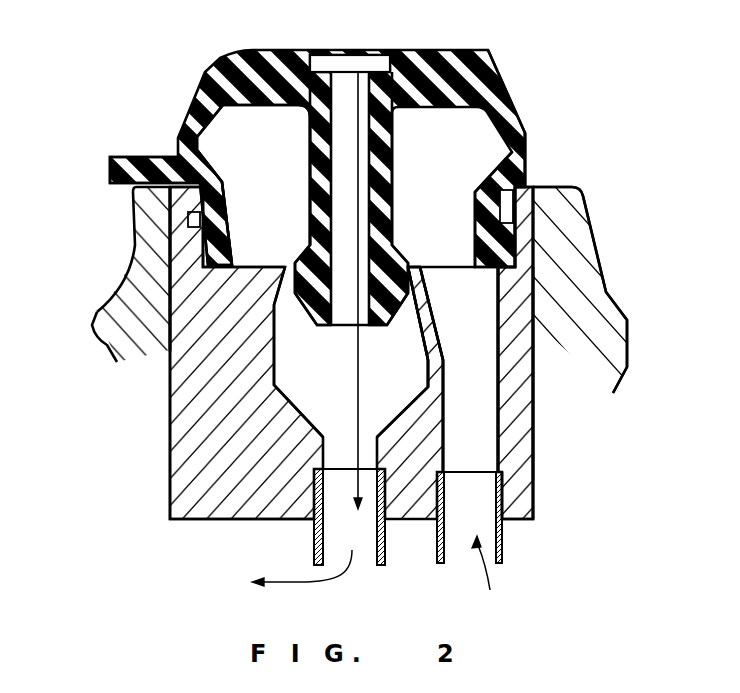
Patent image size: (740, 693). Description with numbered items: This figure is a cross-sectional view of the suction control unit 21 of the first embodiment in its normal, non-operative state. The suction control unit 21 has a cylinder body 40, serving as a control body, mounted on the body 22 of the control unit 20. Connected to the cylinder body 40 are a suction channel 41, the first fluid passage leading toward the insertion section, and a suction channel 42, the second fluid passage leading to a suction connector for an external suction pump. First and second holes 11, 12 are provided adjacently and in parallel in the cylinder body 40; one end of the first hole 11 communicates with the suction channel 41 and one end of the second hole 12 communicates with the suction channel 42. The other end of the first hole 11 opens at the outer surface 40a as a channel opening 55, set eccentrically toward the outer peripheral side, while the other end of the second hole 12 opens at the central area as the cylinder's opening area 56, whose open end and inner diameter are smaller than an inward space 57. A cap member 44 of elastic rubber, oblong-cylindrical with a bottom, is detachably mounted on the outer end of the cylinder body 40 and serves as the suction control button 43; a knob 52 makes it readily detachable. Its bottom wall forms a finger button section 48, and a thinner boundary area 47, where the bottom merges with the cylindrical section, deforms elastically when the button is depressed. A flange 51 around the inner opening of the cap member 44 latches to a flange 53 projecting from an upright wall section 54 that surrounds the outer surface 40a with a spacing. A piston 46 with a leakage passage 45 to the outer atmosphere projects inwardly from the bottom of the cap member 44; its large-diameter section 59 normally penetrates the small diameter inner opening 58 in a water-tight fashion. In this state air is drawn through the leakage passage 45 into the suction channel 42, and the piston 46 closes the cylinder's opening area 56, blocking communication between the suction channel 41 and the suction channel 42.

The first hole 11 is at (476, 440).
The second hole 12 is at (300, 376).
The control unit 20 is at (650, 252).
The suction control unit 21 is at (113, 411).
The body of the control unit 22 is at (606, 295).
The cylinder body 40 is at (170, 475).
The outer surface 40a is at (285, 265).
The suction channel (first fluid passage) 41 is at (503, 548).
The suction channel (second fluid passage) 42 is at (314, 551).
The suction control button 43 is at (217, 63).
The cap member 44 is at (474, 78).
The leakage passage 45 is at (307, 72).
The piston 46 is at (383, 172).
The boundary area 47 is at (519, 126).
The finger button section 48 is at (430, 35).
The flange 51 is at (215, 243).
The knob 52 is at (134, 162).
The flange 53 is at (521, 189).
The upright wall section 54 is at (219, 177).
The channel opening 55 is at (499, 309).
The cylinder's opening area 56 is at (413, 268).
The inward space 57 is at (415, 364).
The small diameter inner opening 58 is at (173, 336).
The large-diameter section 59 is at (308, 297).